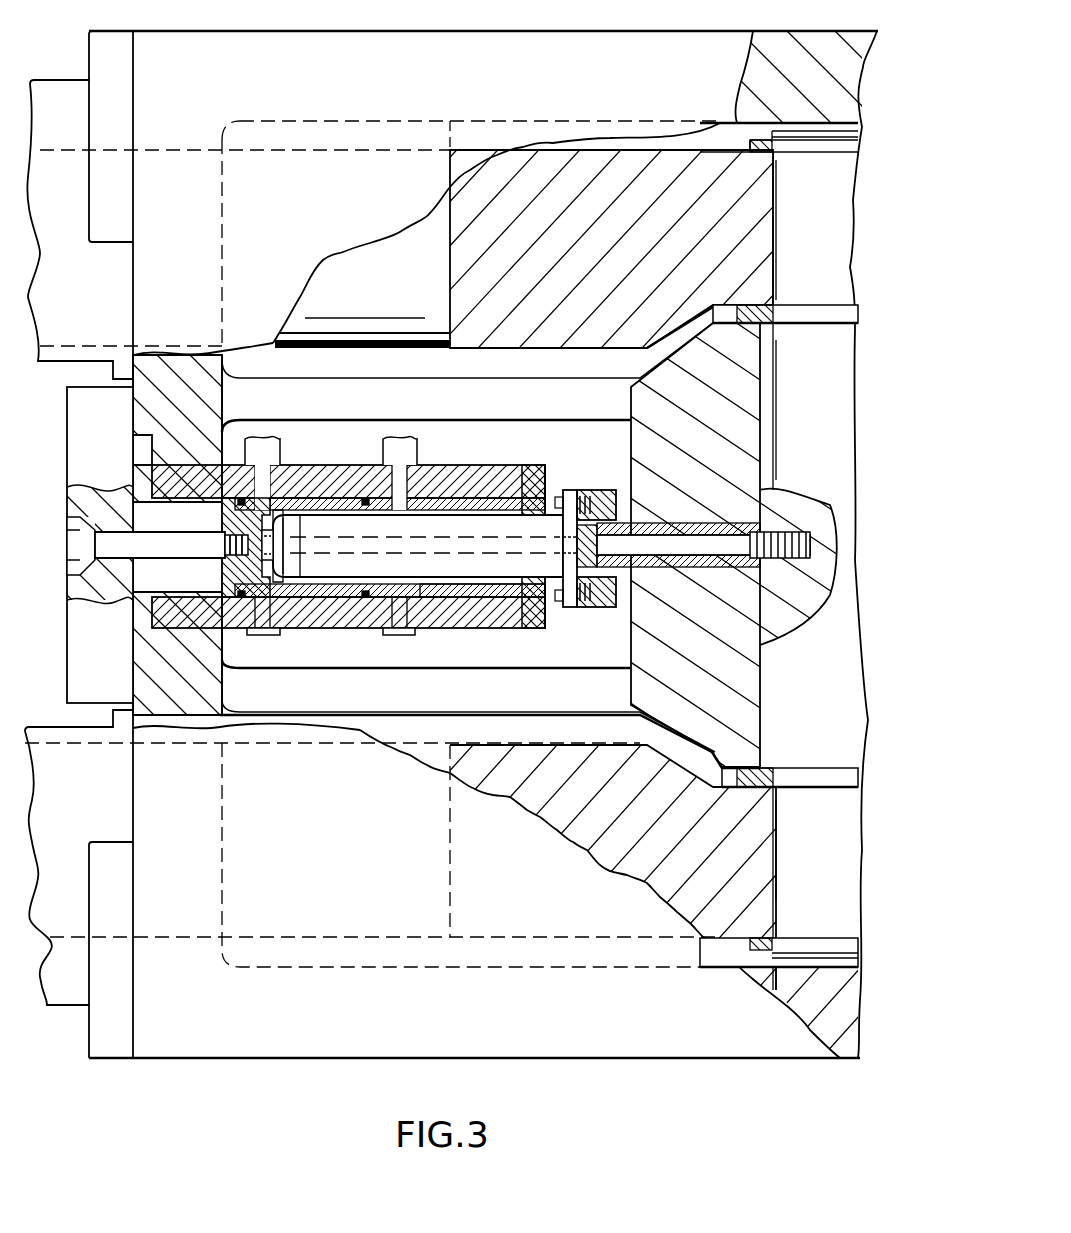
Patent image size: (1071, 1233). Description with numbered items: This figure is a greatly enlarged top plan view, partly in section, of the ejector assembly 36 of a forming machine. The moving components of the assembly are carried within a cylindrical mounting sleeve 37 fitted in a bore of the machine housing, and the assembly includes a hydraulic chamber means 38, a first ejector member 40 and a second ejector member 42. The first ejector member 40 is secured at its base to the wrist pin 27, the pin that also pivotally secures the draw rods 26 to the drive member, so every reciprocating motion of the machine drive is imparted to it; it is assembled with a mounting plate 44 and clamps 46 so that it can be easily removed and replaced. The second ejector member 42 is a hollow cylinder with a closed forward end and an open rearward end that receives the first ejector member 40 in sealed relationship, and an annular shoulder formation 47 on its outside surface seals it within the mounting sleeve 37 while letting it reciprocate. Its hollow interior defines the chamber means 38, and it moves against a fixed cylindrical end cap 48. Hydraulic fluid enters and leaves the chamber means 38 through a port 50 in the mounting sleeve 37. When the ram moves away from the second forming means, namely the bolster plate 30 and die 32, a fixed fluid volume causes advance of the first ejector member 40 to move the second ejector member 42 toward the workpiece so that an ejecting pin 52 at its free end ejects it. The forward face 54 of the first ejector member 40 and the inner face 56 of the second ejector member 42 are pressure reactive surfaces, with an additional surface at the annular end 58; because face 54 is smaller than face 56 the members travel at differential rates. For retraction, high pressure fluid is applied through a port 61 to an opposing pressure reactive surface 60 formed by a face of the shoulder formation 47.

The draw rods 26 is at (388, 284).
The wrist pin 27 is at (836, 439).
The bolster plate 30 is at (67, 450).
The die 32 is at (67, 538).
The ejector assembly 36 is at (512, 460).
The mounting sleeve 37 is at (332, 478).
The hydraulic chamber means 38 is at (281, 478).
The first ejector member 40 is at (318, 568).
The second ejector member 42 is at (232, 588).
The mounting plate 44 is at (568, 488).
The clamps 46 is at (600, 490).
The annular shoulder formation 47 is at (356, 595).
The end cap 48 is at (535, 590).
The port 50 is at (402, 478).
The ejecting pin 52 is at (158, 535).
The forward face 54 is at (283, 527).
The inner face 56 is at (262, 562).
The annular end 58 is at (412, 590).
The opposing pressure reactive surface 60 is at (330, 592).
The port 61 is at (262, 468).